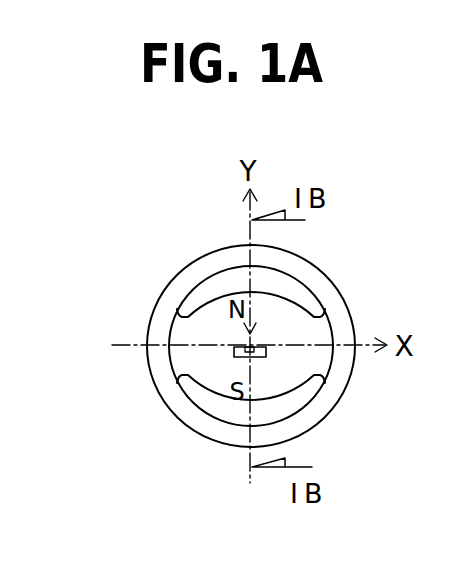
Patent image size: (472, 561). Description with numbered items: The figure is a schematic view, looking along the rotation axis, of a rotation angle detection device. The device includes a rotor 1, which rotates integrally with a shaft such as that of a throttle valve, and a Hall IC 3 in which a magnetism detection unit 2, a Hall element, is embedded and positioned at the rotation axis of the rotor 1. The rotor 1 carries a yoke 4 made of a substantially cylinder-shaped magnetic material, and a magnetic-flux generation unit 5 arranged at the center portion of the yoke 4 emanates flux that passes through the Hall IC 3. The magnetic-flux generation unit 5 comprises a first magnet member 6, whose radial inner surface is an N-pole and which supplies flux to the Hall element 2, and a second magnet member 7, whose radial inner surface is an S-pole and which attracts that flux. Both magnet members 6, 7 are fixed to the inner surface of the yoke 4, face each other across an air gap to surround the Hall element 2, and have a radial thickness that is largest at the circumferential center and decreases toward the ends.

The rotor 1 is at (193, 231).
The magnetism detection unit 2 is at (253, 345).
The Hall IC 3 is at (281, 364).
The yoke 4 is at (192, 418).
The magnetic-flux generation unit 5 is at (189, 339).
The magnetic flux supply magnet member 6 is at (182, 306).
The magnetic flux attraction magnet member 7 is at (209, 385).